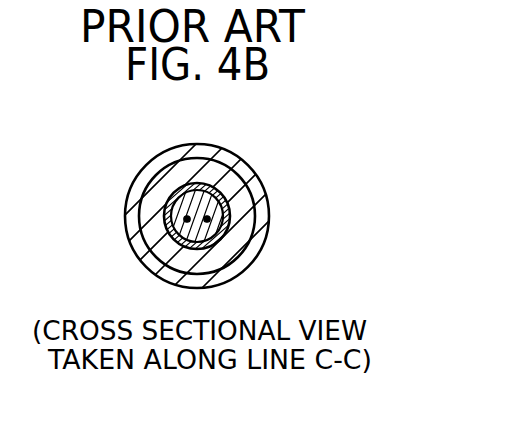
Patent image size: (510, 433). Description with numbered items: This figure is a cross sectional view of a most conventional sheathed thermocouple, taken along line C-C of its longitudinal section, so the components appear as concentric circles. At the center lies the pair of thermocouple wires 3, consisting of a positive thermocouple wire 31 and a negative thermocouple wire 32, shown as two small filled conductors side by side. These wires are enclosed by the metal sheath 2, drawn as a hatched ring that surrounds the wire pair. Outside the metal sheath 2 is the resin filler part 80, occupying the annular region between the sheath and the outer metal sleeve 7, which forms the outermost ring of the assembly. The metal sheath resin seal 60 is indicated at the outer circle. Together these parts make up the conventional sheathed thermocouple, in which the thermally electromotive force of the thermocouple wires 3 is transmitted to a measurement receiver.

The metal sheath resin seal 60 is at (250, 264).
The metal sleeve 7 is at (244, 174).
The resin filler part 80 is at (207, 173).
The metal sheath 2 is at (176, 209).
The pair of thermocouple wires 3 is at (136, 197).
The positive thermocouple wire 31 is at (168, 170).
The negative thermocouple wire 32 is at (175, 193).